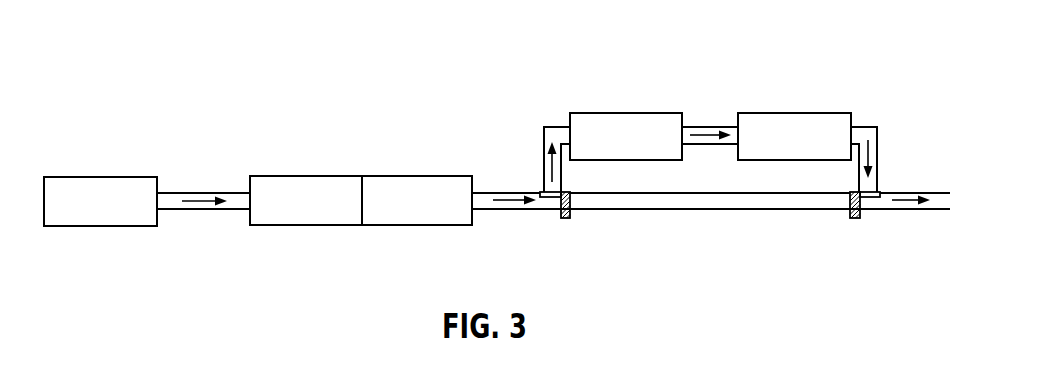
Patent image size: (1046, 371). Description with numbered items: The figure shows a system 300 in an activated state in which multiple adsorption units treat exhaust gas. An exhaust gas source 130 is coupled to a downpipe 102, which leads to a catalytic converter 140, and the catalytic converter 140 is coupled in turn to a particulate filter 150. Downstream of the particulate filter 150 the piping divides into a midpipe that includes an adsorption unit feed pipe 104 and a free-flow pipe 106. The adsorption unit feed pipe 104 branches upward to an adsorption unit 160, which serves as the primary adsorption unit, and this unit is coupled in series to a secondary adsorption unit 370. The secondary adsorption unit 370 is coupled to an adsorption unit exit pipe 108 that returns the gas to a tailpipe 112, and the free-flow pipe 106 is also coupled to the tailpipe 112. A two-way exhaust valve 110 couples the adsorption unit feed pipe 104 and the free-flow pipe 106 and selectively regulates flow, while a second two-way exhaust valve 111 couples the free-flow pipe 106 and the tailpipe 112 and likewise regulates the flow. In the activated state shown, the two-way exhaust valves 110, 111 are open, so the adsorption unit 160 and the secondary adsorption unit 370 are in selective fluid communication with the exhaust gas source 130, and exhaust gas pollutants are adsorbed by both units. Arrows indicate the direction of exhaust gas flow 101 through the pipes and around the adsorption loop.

The system 300 is at (134, 51).
The exhaust gas source 130 is at (123, 214).
The catalytic converter 140 is at (328, 213).
The particulate filter 150 is at (440, 213).
The adsorption unit 160 is at (648, 150).
The secondary adsorption unit 370 is at (817, 150).
The exhaust gas flow 101 is at (205, 209).
The downpipe 102 is at (176, 193).
The adsorption unit feed pipe 104 is at (544, 140).
The free-flow pipe 106 is at (713, 210).
The adsorption unit exit pipe 108 is at (863, 127).
The two-way exhaust valve 110 is at (563, 219).
The two-way exhaust valve 111 is at (855, 219).
The tailpipe 112 is at (917, 193).